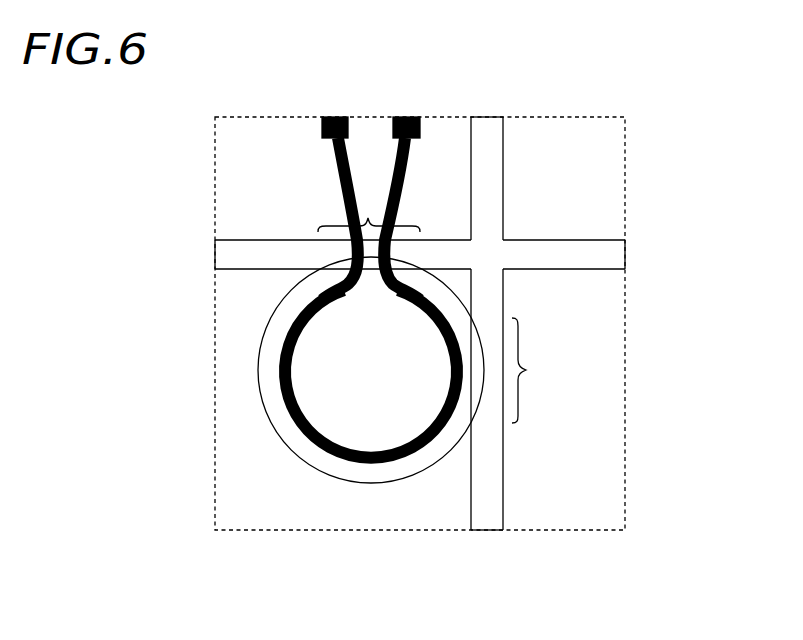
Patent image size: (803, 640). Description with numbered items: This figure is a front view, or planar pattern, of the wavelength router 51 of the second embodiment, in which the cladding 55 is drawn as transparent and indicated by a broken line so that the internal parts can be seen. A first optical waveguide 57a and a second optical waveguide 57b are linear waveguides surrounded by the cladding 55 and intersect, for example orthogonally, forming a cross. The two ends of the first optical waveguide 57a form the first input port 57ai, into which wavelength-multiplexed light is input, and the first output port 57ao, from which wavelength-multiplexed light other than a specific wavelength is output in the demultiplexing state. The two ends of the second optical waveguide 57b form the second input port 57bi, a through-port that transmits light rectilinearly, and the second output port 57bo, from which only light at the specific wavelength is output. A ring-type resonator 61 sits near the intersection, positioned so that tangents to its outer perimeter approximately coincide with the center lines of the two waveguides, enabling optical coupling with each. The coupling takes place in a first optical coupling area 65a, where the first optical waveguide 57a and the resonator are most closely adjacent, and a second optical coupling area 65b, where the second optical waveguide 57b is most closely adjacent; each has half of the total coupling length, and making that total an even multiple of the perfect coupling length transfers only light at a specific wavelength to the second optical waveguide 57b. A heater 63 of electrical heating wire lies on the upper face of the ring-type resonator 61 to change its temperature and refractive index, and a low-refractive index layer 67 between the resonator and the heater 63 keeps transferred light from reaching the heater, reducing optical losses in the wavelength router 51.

The wavelength router 51 is at (653, 122).
The cladding 55 is at (230, 506).
The first optical waveguide 57a is at (570, 248).
The first input port 57ai is at (213, 256).
The first output port 57ao is at (633, 253).
The second optical waveguide 57b is at (484, 480).
The second input port 57bi is at (485, 114).
The second output port 57bo is at (488, 534).
The ring-type resonator 61 is at (271, 437).
The heater 63 is at (300, 331).
The first optical coupling area 65a is at (370, 216).
The second optical coupling area 65b is at (527, 370).
The low-refractive index layer 67 is at (270, 373).